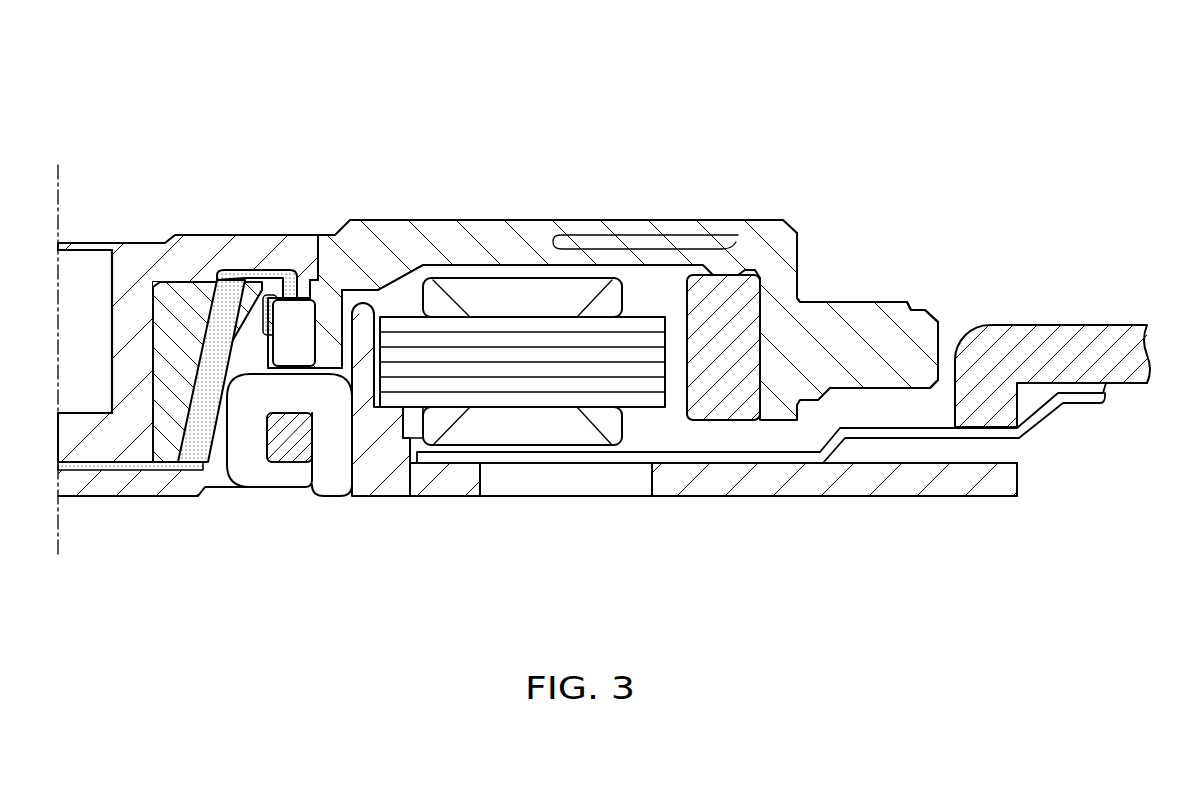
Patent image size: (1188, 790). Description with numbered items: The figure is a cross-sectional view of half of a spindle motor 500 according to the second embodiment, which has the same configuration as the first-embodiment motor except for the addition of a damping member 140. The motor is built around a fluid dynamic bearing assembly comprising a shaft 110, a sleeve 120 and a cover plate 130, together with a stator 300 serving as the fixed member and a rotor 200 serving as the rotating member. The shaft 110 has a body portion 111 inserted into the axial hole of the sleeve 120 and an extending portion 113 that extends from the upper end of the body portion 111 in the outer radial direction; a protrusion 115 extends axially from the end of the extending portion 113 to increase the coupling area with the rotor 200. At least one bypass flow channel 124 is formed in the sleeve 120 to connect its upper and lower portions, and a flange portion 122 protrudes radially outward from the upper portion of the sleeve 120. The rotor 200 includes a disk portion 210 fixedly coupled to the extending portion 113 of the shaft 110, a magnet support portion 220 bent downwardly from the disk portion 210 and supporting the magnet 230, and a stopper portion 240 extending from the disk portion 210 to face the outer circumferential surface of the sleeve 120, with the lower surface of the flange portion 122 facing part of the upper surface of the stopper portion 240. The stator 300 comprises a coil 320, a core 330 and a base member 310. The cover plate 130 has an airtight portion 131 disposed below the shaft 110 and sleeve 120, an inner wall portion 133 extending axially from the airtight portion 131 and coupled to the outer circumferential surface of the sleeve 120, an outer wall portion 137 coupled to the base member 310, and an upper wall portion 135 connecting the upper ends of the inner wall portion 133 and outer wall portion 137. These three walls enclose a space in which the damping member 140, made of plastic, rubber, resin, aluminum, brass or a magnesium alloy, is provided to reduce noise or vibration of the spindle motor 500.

The spindle motor 500 is at (604, 323).
The shaft 110 is at (188, 288).
The body portion 111 is at (130, 323).
The extending portion 113 is at (232, 298).
The protrusion 115 is at (308, 337).
The sleeve 120 is at (175, 357).
The flange portion 122 is at (93, 470).
The bypass flow channel 124 is at (198, 410).
The cover plate 130 is at (602, 459).
The airtight portion 131 is at (247, 457).
The inner wall portion 133 is at (293, 403).
The upper wall portion 135 is at (337, 403).
The outer wall portion 137 is at (337, 483).
The damping member 140 is at (307, 430).
The rotor 200 is at (601, 263).
The disk portion 210 is at (500, 243).
The magnet support portion 220 is at (775, 280).
The magnet 230 is at (707, 298).
The stopper portion 240 is at (395, 300).
The stator 300 is at (765, 446).
The base member 310 is at (624, 578).
The coil 320 is at (517, 427).
The core 330 is at (563, 383).